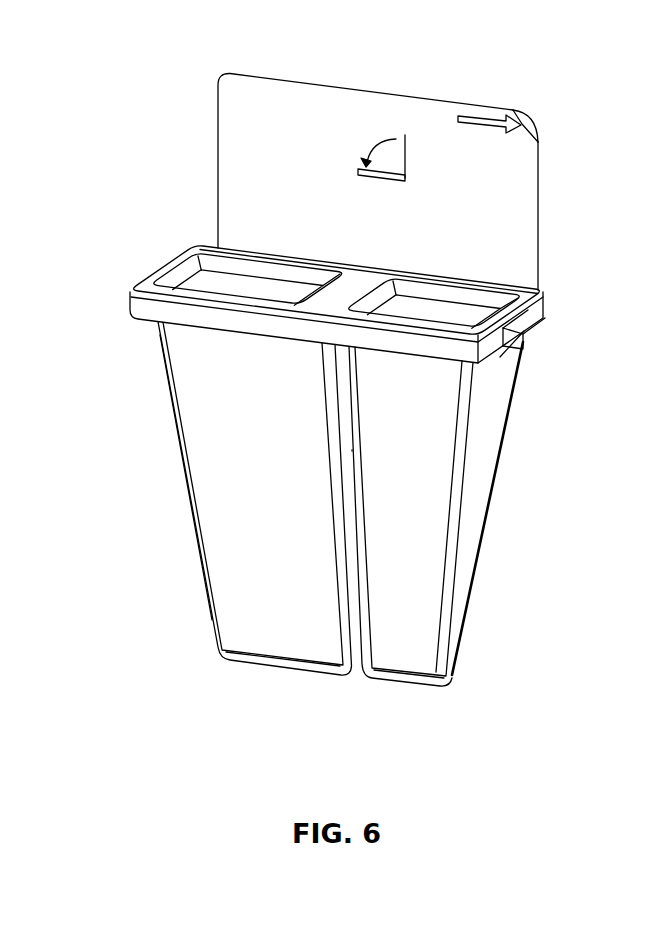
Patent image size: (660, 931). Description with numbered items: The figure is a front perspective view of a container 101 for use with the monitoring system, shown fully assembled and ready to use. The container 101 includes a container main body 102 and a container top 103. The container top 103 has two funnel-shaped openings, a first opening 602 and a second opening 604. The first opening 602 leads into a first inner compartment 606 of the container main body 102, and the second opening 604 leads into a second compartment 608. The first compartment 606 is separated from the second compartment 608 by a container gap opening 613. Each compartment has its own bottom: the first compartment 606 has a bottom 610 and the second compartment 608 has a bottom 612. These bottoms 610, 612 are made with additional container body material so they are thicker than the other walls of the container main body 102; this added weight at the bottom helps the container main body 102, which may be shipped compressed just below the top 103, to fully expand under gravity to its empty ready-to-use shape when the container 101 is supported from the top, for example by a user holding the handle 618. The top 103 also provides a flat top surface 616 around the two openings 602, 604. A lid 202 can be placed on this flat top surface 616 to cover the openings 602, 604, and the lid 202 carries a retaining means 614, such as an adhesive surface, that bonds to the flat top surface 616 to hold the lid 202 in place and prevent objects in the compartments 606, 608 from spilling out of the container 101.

The container 101 is at (526, 451).
The container main body 102 is at (240, 451).
The container top 103 is at (146, 308).
The lid 202 is at (228, 110).
The first opening 602 is at (190, 238).
The second opening 604 is at (496, 258).
The first inner compartment 606 is at (207, 533).
The second compartment 608 is at (478, 509).
The bottom of first compartment 610 is at (257, 661).
The bottom of second compartment 612 is at (408, 689).
The container gap opening 613 is at (362, 683).
The retaining means 614 is at (534, 118).
The flat top surface 616 is at (488, 328).
The handle 618 is at (548, 313).